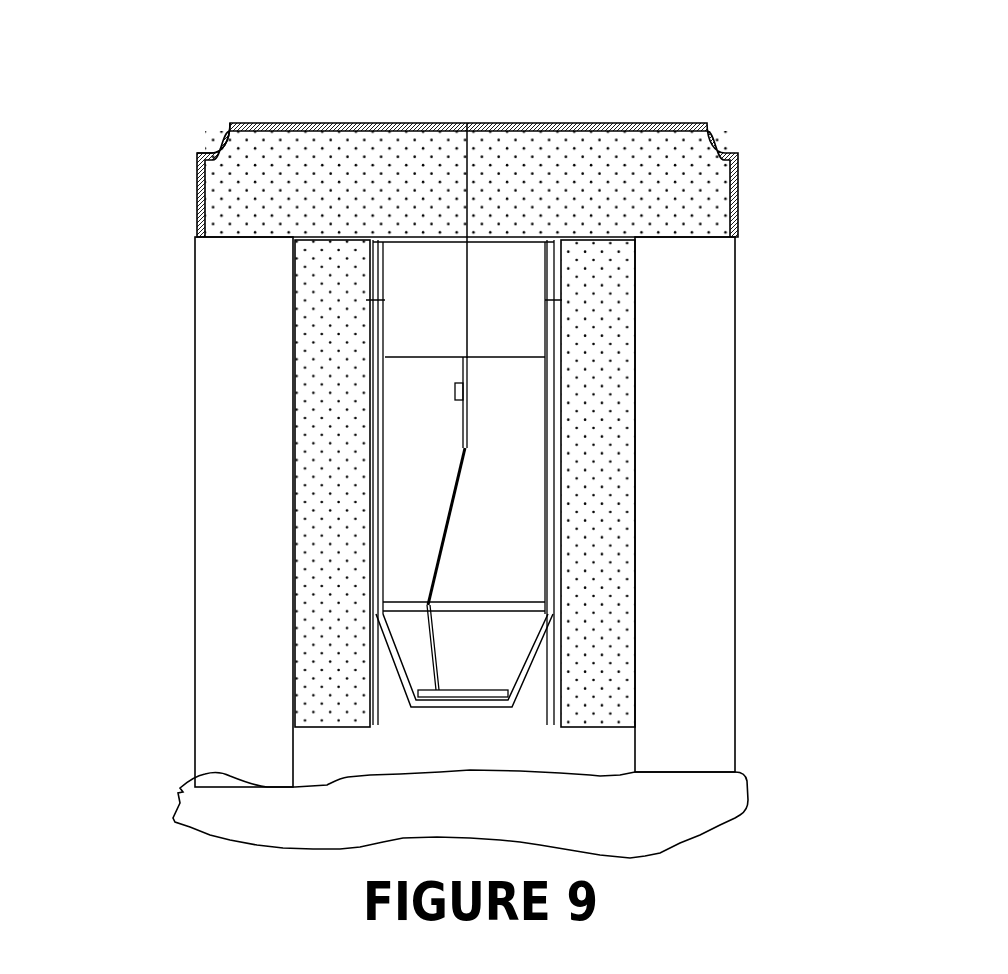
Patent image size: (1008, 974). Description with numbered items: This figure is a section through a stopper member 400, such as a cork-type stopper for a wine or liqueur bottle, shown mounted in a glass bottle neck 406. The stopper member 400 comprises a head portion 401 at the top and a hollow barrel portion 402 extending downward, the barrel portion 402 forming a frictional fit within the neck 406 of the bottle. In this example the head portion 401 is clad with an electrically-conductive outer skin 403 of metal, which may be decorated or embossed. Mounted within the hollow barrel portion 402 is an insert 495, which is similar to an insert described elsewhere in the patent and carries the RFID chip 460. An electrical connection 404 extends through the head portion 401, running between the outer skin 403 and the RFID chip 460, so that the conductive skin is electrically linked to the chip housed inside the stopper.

The stopper member 400 is at (467, 438).
The head portion 401 is at (358, 178).
The hollow barrel portion 402 is at (322, 435).
The outer skin 403 is at (215, 145).
The electrical connection 404 is at (468, 185).
The bottle neck 406 is at (772, 490).
The RFID chip 460 is at (455, 392).
The insert 495 is at (380, 545).